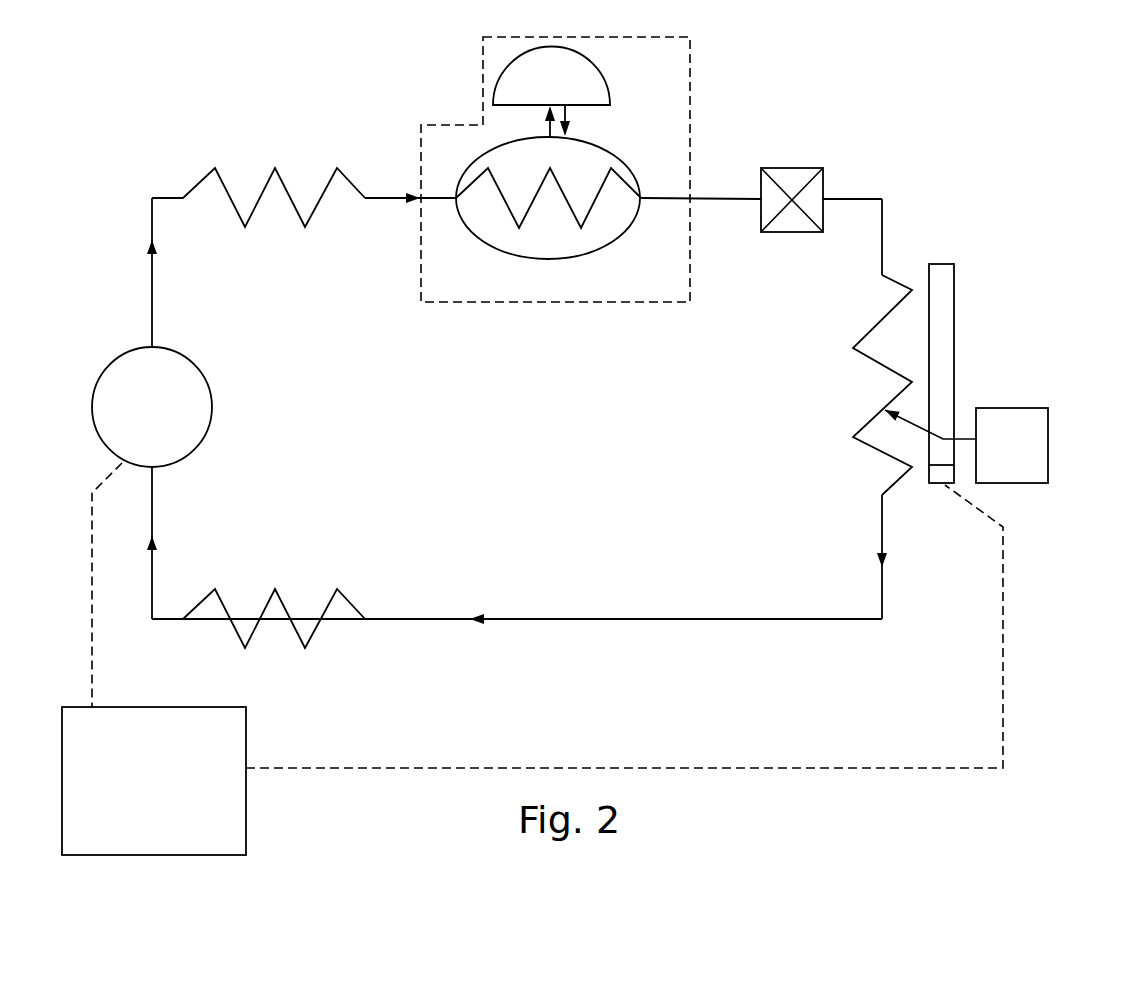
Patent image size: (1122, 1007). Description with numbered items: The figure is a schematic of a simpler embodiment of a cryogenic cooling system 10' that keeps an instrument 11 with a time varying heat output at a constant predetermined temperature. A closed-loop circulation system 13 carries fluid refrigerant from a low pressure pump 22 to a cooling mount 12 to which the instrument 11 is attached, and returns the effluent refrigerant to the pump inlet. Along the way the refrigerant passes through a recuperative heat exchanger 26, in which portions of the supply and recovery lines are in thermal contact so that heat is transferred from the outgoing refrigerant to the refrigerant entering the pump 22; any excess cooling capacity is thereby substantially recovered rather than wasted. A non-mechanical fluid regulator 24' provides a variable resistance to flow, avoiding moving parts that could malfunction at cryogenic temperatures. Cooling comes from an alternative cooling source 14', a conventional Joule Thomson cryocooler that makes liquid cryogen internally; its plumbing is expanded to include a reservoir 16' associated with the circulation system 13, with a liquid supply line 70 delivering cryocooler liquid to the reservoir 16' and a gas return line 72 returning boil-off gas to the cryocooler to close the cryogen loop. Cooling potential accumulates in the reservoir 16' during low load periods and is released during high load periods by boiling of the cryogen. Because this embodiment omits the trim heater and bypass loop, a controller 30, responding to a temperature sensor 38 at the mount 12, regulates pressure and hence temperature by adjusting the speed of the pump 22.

The cooling system 10' is at (578, 169).
The instrument 11 is at (1048, 418).
The cooling mount 12 is at (954, 337).
The circulation system 13 is at (713, 187).
The cooling source 14' is at (466, 76).
The reservoir 16' is at (567, 216).
The pump 22 is at (183, 468).
The fluid regulator 24' is at (864, 142).
The recuperative heat exchanger 26 is at (223, 182).
The controller 30 is at (246, 828).
The temperature sensor 38 is at (935, 485).
The liquid supply line 70 is at (567, 118).
The gas return line 72 is at (547, 127).